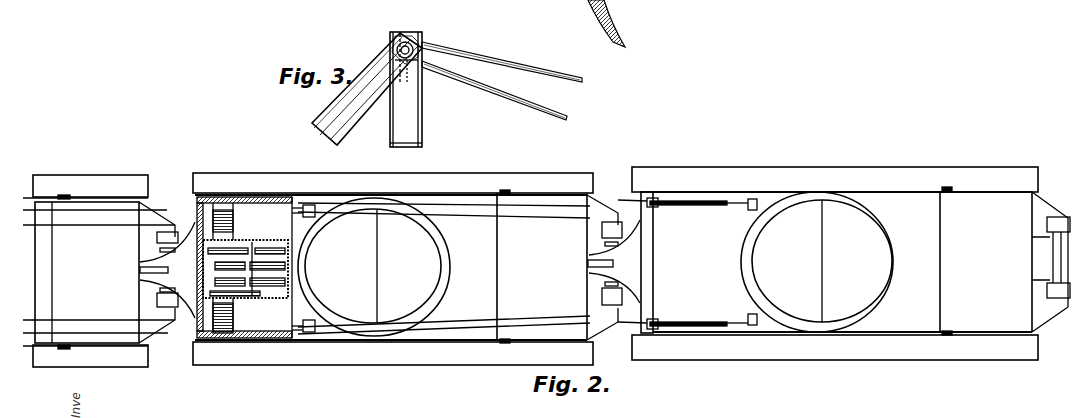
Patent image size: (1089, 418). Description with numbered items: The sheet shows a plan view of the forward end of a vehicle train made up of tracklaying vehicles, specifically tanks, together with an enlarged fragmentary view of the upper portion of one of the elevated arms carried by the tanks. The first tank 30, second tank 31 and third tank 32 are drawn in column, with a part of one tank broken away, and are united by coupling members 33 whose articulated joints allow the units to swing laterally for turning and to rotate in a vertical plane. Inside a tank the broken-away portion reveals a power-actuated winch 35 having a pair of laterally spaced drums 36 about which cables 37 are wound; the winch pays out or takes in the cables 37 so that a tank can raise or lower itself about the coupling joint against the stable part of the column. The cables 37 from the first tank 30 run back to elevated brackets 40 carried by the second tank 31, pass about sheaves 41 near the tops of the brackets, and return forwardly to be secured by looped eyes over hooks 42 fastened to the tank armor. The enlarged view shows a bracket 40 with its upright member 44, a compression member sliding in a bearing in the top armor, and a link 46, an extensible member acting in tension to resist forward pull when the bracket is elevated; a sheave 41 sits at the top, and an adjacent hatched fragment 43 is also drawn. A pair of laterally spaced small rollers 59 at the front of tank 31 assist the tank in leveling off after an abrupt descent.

In FIG. 2, the first tank 30 is at (860, 262).
In FIG. 2, the second tank 31 is at (458, 266).
In FIG. 2, the third tank 32 is at (99, 272).
In FIG. 2, the coupling member 33 is at (177, 306).
In FIG. 2, the power-actuated winch 35 is at (247, 241).
In FIG. 2, the drum 36 is at (234, 306).
In FIG. 3, the cable 37 is at (516, 106).
In FIG. 2, the cable 37 is at (97, 220).
In FIG. 3, the elevated bracket 40 is at (450, 125).
In FIG. 2, the elevated bracket 40 is at (320, 194).
In FIG. 3, the sheave 41 is at (410, 42).
In FIG. 2, the hook 42 is at (62, 197).
In FIG. 3, the hatched arc member 43 is at (615, 15).
In FIG. 3, the upright member 44 is at (423, 135).
In FIG. 2, the upright member 44 is at (750, 209).
In FIG. 3, the link 46 is at (356, 124).
In FIG. 2, the link 46 is at (686, 205).
In FIG. 2, the roller 59 is at (1058, 218).